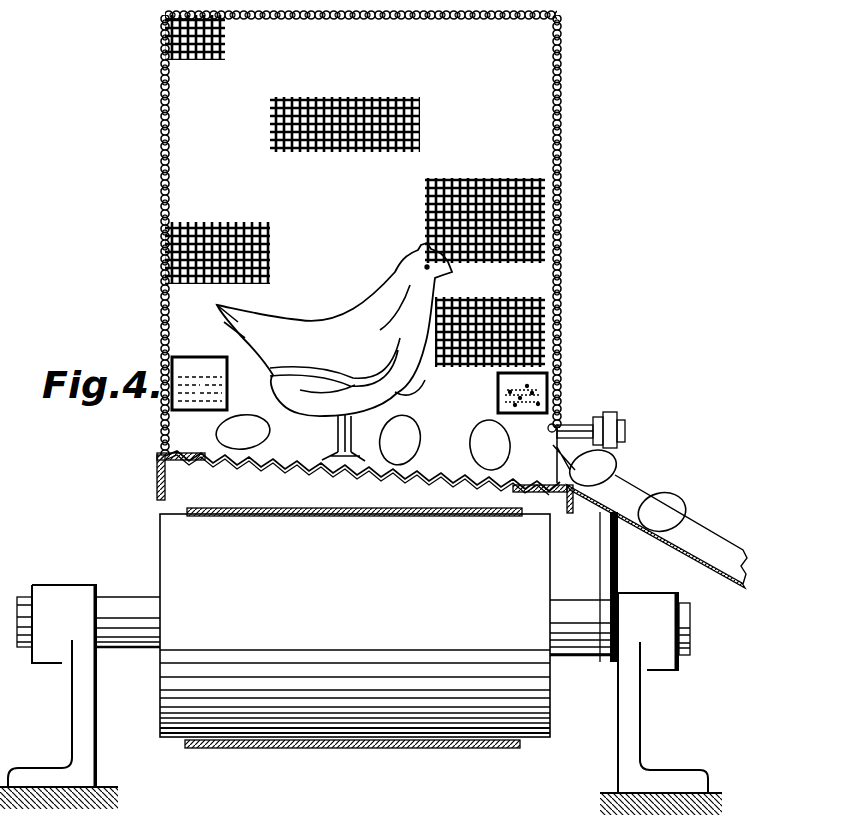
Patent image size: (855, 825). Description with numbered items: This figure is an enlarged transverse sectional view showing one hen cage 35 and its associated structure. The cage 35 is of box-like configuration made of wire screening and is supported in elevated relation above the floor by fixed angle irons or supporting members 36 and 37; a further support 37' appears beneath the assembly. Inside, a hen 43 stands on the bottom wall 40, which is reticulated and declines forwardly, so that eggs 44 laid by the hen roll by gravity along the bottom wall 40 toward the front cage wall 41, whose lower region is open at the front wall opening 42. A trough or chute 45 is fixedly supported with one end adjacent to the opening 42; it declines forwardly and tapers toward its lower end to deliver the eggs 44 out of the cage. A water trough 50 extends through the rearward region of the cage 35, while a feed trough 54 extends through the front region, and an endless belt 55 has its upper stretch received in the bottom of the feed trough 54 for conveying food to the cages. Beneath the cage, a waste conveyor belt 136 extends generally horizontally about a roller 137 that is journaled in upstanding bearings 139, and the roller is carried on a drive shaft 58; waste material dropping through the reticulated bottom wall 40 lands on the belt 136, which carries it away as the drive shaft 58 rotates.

The hen cage 35 is at (562, 72).
The front cage wall 41 is at (558, 290).
The hen 43 is at (347, 332).
The water trough 50 is at (200, 370).
The feed trough 54 is at (530, 390).
The front wall opening 42 is at (557, 450).
The eggs 44 is at (407, 437).
The bottom wall 40 is at (302, 467).
The endless belt 55 is at (517, 417).
The supporting member 37 is at (150, 479).
The supporting member 36 is at (560, 515).
The trough or chute 45 is at (735, 573).
The roller 137 is at (355, 622).
The conveyor belt 136 is at (425, 752).
The drive shaft 58 is at (128, 607).
The bearings 139 is at (700, 727).
The bracket 37' is at (169, 813).